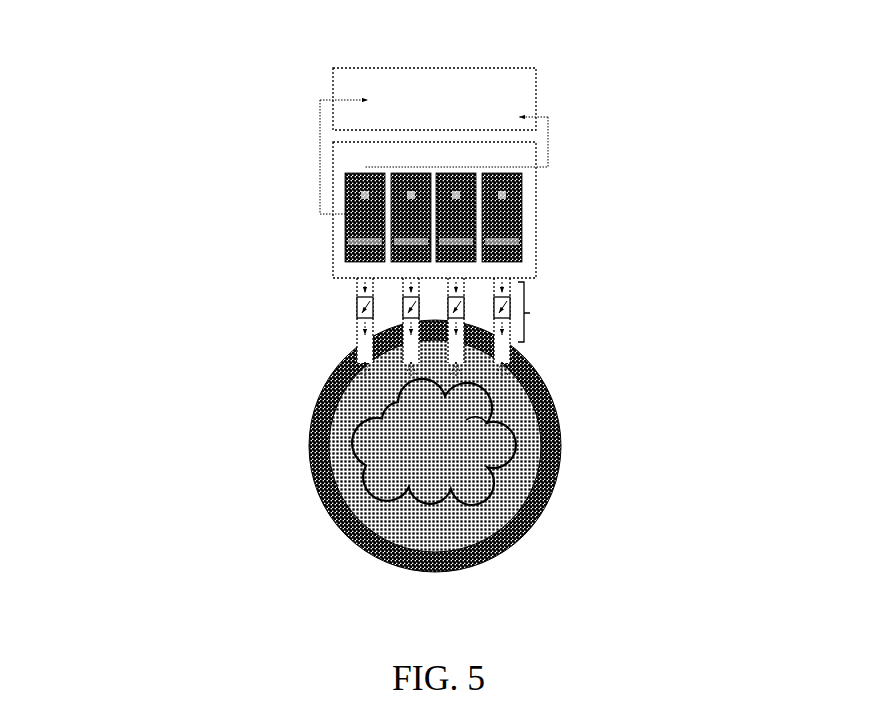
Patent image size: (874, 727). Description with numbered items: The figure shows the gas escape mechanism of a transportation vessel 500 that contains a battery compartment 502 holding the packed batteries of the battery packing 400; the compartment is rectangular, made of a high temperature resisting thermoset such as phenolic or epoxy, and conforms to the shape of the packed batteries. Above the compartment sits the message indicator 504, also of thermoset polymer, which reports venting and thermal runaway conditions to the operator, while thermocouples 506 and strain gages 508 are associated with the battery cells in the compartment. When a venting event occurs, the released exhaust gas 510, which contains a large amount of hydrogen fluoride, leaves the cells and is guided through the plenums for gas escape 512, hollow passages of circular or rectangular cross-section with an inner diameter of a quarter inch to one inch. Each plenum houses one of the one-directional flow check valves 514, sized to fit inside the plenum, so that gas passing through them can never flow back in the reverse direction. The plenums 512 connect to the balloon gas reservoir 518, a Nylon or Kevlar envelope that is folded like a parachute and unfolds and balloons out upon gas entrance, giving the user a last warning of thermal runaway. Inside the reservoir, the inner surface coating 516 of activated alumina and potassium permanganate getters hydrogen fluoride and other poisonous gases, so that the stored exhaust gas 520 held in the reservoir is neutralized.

The transportation vessel 500 is at (306, 40).
The battery compartment 502 is at (333, 141).
The battery packing 400 is at (351, 214).
The message indicator 504 is at (540, 66).
The thermocouples 506 is at (520, 184).
The strain gages 508 is at (522, 234).
The released exhaust gas 510 is at (526, 270).
The plenums for gas escape 512 is at (542, 313).
The 1D flow check valves 514 is at (349, 308).
The inner surface coating 516 is at (326, 399).
The balloon gas reservoir 518 is at (303, 463).
The stored exhaust gas 520 is at (482, 443).